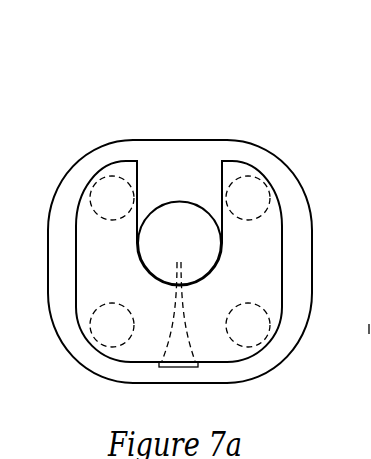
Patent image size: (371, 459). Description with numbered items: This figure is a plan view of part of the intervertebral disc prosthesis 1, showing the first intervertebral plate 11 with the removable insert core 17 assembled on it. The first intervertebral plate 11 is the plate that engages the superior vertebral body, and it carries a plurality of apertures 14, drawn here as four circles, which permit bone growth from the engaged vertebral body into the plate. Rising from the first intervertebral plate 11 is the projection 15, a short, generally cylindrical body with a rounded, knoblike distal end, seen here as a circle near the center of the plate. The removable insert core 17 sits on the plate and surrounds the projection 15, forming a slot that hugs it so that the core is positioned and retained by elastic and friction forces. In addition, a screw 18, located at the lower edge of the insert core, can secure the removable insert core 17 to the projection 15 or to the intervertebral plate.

The intervertebral disc prosthesis 1 is at (90, 110).
The first intervertebral plate 11 is at (275, 158).
The apertures 14 is at (255, 325).
The projection 15 is at (182, 184).
The removable insert core 17 is at (76, 272).
The screw 18 is at (172, 367).